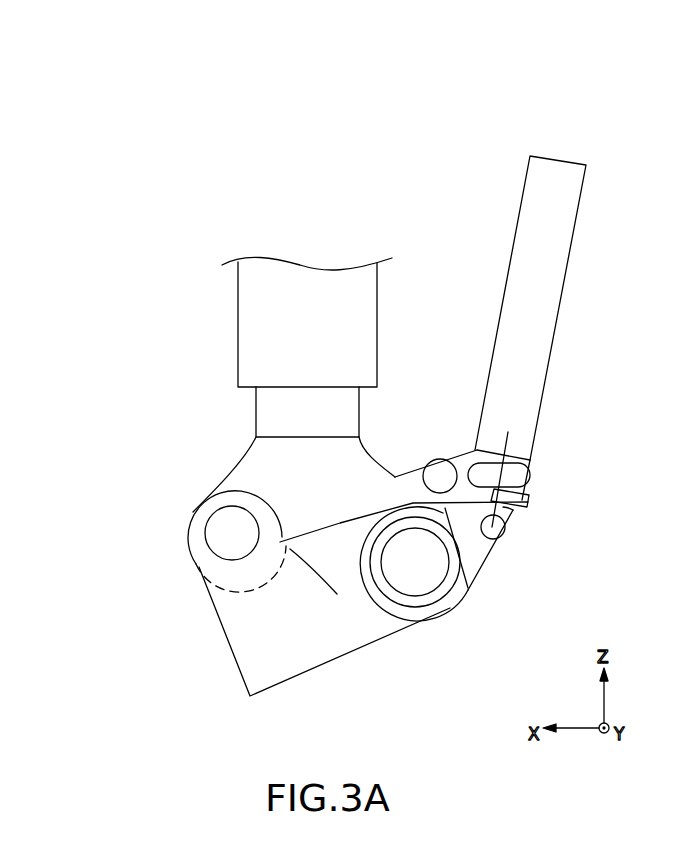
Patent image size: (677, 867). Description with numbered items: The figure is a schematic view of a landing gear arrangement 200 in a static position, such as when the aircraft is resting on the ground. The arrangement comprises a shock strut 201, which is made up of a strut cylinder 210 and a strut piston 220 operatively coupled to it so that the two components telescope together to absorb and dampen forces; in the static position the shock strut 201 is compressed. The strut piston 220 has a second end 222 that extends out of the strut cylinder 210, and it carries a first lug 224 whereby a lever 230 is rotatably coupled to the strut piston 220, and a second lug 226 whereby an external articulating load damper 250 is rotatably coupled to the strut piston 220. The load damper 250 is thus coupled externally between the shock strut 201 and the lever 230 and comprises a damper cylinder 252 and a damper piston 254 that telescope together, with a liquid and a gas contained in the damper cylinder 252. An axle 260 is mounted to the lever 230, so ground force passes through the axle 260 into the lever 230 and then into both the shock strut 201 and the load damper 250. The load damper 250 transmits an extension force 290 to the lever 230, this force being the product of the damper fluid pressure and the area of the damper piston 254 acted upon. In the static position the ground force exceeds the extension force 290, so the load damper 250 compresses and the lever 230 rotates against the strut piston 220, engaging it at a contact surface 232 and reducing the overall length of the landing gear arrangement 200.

The landing gear arrangement 200 is at (252, 181).
The shock strut 201 is at (248, 272).
The strut cylinder 210 is at (252, 354).
The strut piston 220 is at (256, 414).
The second end 222 is at (250, 455).
The first lug 224 is at (187, 522).
The second lug 226 is at (395, 475).
The lever 230 is at (358, 635).
The contact surface 232 is at (427, 477).
The load damper 250 is at (523, 217).
The damper cylinder 252 is at (545, 312).
The damper piston 254 is at (517, 513).
The axle 260 is at (450, 573).
The extension force 290 is at (530, 490).